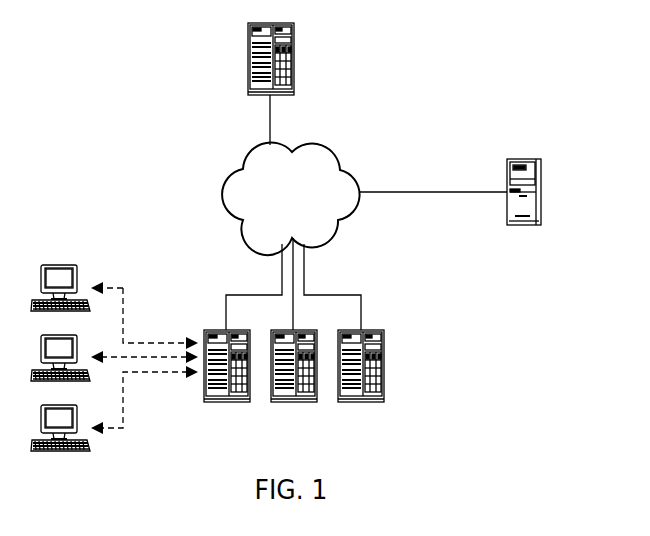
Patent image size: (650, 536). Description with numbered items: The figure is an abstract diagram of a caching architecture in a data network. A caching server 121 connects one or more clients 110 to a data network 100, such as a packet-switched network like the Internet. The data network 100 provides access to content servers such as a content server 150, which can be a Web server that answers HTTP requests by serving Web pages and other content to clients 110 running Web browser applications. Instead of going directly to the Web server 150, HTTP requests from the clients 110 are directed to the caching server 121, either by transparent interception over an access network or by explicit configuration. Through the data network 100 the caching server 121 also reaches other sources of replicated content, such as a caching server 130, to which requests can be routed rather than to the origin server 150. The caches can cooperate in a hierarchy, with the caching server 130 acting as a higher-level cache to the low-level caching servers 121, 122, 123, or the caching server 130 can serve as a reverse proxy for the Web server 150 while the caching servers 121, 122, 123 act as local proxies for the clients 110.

The data network 100 is at (291, 198).
The clients 110 is at (114, 349).
The caching server 121 is at (243, 333).
The caching server 122 is at (294, 330).
The caching server 123 is at (344, 333).
The caching server 130 is at (271, 74).
The content server 150 is at (450, 203).